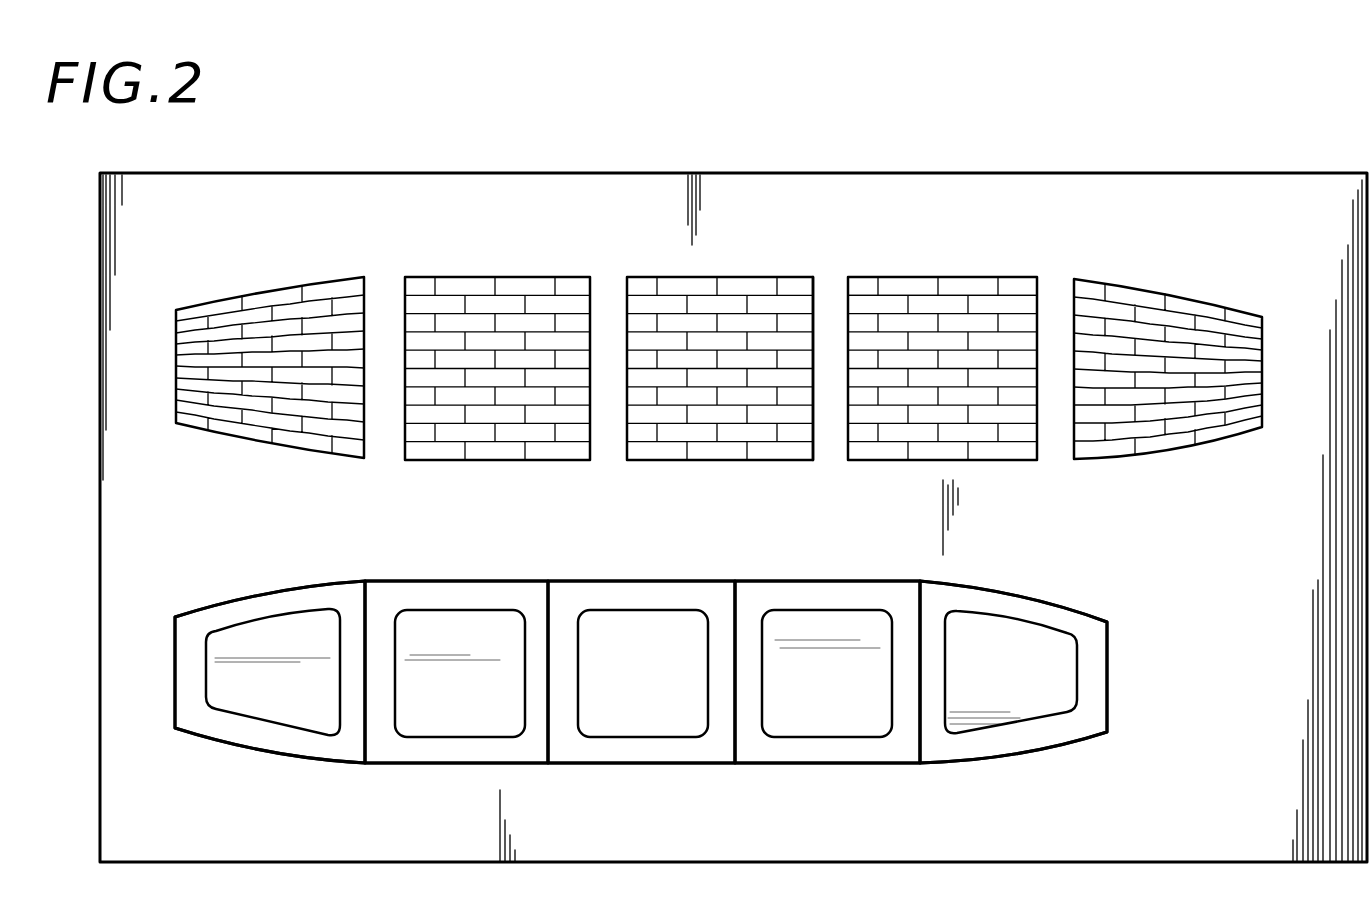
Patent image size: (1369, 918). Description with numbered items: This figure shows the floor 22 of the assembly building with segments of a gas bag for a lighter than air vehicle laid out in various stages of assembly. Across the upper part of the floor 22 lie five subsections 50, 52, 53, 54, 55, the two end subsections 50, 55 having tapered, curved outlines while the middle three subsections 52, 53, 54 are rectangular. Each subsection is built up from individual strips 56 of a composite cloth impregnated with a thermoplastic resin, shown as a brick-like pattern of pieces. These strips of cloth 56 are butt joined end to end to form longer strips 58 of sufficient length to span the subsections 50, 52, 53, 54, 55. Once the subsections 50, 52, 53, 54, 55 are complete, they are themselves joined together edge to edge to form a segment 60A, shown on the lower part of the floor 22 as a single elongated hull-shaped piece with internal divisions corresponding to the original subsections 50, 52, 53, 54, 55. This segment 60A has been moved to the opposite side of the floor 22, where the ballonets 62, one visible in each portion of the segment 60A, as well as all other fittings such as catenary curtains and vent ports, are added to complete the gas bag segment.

The floor 22 is at (1182, 834).
The subsection 50 is at (303, 277).
The subsection 52 is at (483, 276).
The subsection 53 is at (735, 277).
The subsection 54 is at (1033, 277).
The subsection 55 is at (1150, 279).
The strip of composite cloth 56 is at (1010, 277).
The strip 58 is at (813, 290).
The segment 60A is at (1109, 680).
The ballonet 62 is at (283, 723).